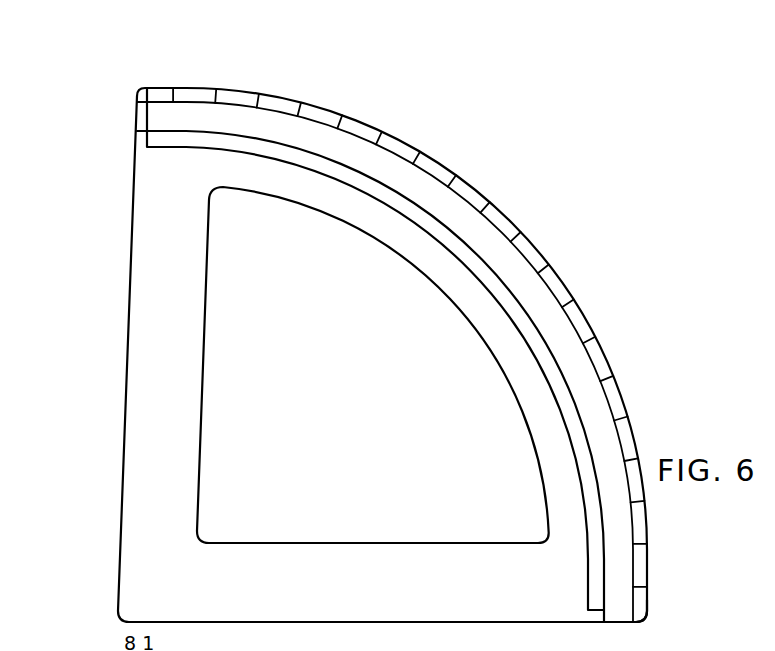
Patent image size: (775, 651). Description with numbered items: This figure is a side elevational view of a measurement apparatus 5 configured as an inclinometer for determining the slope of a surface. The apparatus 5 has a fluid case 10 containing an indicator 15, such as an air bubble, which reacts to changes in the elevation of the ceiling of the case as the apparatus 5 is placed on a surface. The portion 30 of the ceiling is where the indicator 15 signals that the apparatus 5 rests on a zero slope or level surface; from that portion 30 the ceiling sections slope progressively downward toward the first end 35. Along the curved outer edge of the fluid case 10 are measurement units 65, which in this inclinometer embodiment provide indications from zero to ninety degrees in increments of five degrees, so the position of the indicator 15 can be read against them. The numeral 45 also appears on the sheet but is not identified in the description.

The protractor measuring device 5 is at (55, 76).
The body 10 is at (522, 243).
The angular scale 15 is at (161, 108).
The raised edge 30 is at (147, 88).
The corner 35 is at (647, 610).
The edge 45 is at (774, 638).
The indicia marks 65 is at (563, 313).